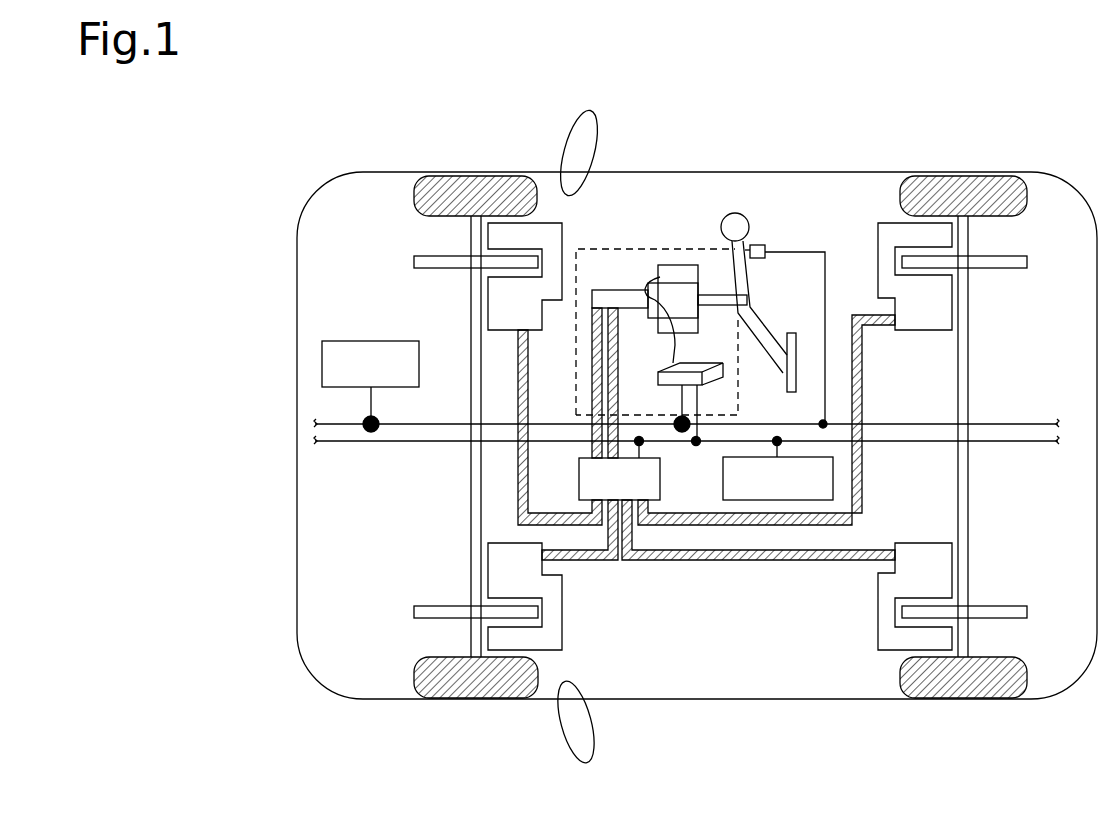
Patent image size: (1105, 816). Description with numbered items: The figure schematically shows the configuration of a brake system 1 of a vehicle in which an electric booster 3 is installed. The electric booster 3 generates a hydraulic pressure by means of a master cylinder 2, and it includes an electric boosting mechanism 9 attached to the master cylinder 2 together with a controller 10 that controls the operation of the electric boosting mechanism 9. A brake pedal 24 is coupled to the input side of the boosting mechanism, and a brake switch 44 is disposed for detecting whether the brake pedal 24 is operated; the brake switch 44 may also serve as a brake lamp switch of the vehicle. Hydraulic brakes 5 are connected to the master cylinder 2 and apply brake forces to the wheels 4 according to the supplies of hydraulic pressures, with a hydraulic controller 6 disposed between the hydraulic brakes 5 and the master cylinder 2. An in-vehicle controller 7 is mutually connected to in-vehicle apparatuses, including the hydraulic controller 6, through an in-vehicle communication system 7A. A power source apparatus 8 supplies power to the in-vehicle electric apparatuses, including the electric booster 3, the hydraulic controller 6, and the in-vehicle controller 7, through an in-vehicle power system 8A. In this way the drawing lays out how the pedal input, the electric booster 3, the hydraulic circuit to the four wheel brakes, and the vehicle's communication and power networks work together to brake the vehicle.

The brake system 1 is at (826, 138).
The master cylinder 2 is at (614, 290).
The electric booster 3 is at (645, 249).
The wheels 4 is at (452, 184).
The hydraulic brakes 5 is at (563, 232).
The hydraulic controller 6 is at (660, 472).
The in-vehicle controller 7 is at (723, 488).
The in-vehicle communication system 7A is at (905, 442).
The power source apparatus 8 is at (368, 340).
The in-vehicle power system 8A is at (910, 423).
The electric boosting mechanism 9 is at (680, 265).
The controller 10 is at (676, 364).
The brake pedal 24 is at (757, 318).
The brake switch 44 is at (760, 245).